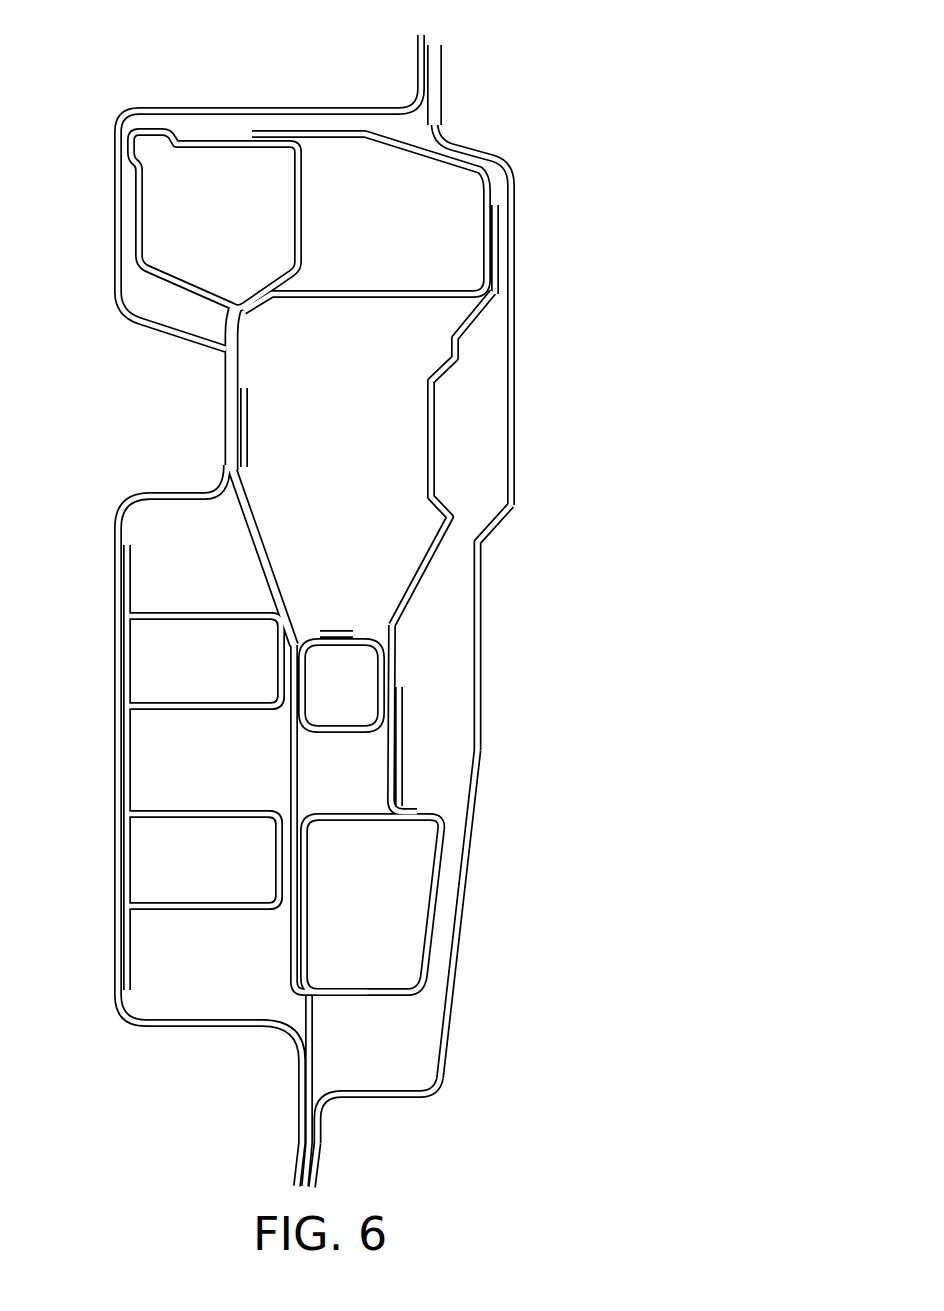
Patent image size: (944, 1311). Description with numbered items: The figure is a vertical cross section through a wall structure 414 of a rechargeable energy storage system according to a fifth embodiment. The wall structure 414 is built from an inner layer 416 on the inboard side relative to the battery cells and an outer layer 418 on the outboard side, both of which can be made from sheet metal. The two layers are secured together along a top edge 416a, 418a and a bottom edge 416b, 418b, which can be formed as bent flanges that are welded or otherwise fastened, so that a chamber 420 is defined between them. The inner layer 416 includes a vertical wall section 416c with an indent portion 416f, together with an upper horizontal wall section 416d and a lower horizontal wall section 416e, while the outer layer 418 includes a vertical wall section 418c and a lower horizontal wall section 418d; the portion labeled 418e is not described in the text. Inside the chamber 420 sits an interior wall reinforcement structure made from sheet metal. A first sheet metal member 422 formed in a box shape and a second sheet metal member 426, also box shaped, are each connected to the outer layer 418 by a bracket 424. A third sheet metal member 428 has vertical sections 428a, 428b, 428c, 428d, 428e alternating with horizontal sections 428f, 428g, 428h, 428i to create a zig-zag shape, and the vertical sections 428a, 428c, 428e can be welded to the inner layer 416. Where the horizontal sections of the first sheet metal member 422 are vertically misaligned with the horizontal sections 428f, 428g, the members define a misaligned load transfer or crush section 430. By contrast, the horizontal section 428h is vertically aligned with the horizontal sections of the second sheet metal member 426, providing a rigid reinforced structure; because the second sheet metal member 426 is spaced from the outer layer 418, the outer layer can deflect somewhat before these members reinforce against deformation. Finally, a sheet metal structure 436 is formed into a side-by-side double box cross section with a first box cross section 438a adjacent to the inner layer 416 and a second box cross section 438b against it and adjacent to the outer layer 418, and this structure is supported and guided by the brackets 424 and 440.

The wall structure 414 is at (332, 603).
The inner layer 416 is at (224, 601).
The top edge 416a is at (417, 68).
The bottom edge 416b is at (300, 1090).
The vertical wall section 416c is at (120, 543).
The upper horizontal wall section 416d is at (278, 105).
The lower horizontal wall section 416e is at (230, 1025).
The indent portion 416f is at (172, 325).
The outer layer 418 is at (470, 617).
The top edge 418a is at (442, 95).
The bottom edge 418b is at (320, 1160).
The vertical wall section 418c is at (512, 496).
The lower horizontal wall section 418d is at (470, 140).
The second extrusion bottom wall 418e is at (380, 1100).
The chamber 420 is at (371, 426).
The first sheet metal member 422 is at (372, 633).
The bracket 424 is at (437, 590).
The second sheet metal member 426 is at (430, 905).
The third sheet metal member 428 is at (157, 761).
The vertical section 428a is at (132, 577).
The vertical section 428b is at (272, 665).
The vertical section 428c is at (128, 745).
The vertical section 428d is at (278, 858).
The vertical section 428e is at (118, 963).
The horizontal section 428f is at (165, 616).
The horizontal section 428g is at (190, 708).
The horizontal section 428h is at (225, 818).
The horizontal section 428i is at (188, 912).
The misaligned load transfer section 430 is at (178, 678).
The sheet metal structure 436 is at (348, 195).
The first box cross section 438a is at (133, 218).
The second box cross section 438b is at (490, 200).
The bracket 440 is at (237, 340).